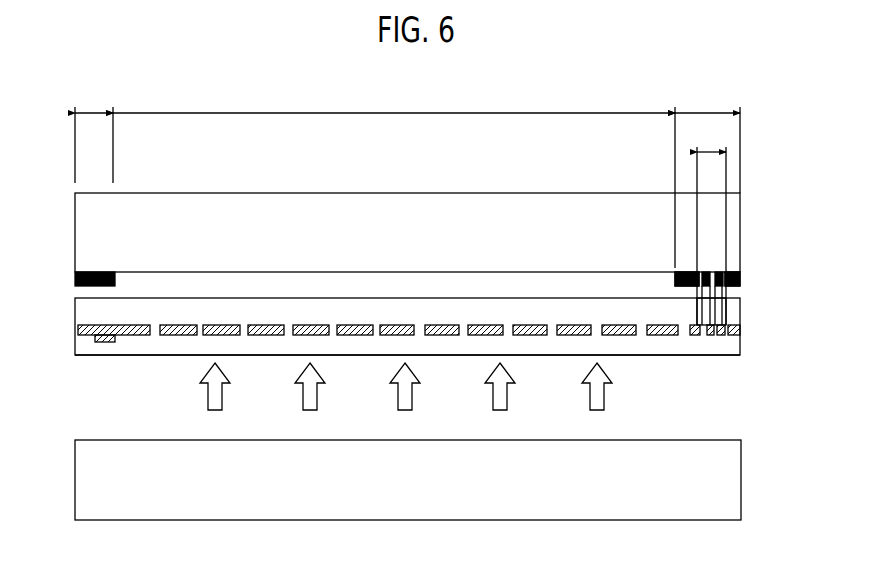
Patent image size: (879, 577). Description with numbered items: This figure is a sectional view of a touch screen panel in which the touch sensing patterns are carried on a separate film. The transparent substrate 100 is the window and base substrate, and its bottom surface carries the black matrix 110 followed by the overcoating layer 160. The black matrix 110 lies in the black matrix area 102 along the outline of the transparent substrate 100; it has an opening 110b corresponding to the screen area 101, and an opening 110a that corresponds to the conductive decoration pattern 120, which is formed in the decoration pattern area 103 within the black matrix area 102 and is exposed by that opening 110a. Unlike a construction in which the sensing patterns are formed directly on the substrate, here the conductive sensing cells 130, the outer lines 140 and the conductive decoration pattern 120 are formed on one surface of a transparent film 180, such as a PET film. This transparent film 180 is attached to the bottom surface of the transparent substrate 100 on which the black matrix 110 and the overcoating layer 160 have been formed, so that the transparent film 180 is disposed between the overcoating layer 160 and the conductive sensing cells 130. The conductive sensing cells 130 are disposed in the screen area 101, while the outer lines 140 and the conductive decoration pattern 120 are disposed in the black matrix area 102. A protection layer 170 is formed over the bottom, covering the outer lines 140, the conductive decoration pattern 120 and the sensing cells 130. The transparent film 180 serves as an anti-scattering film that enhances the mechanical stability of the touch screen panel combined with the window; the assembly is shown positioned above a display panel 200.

The transparent substrate 100 is at (742, 210).
The screen area 101 is at (394, 177).
The black matrix area 102 is at (407, 139).
The decoration pattern area 103 is at (712, 224).
The black matrix 110 is at (742, 273).
The opening 110a is at (724, 270).
The opening 110b is at (662, 270).
The conductive decoration pattern 120 is at (742, 333).
The conductive sensing cells 130 is at (625, 335).
The outer lines 140 is at (73, 330).
The overcoating layer 160 is at (737, 293).
The protection layer 170 is at (728, 344).
The transparent film 180 is at (737, 313).
The display panel 200 is at (742, 485).